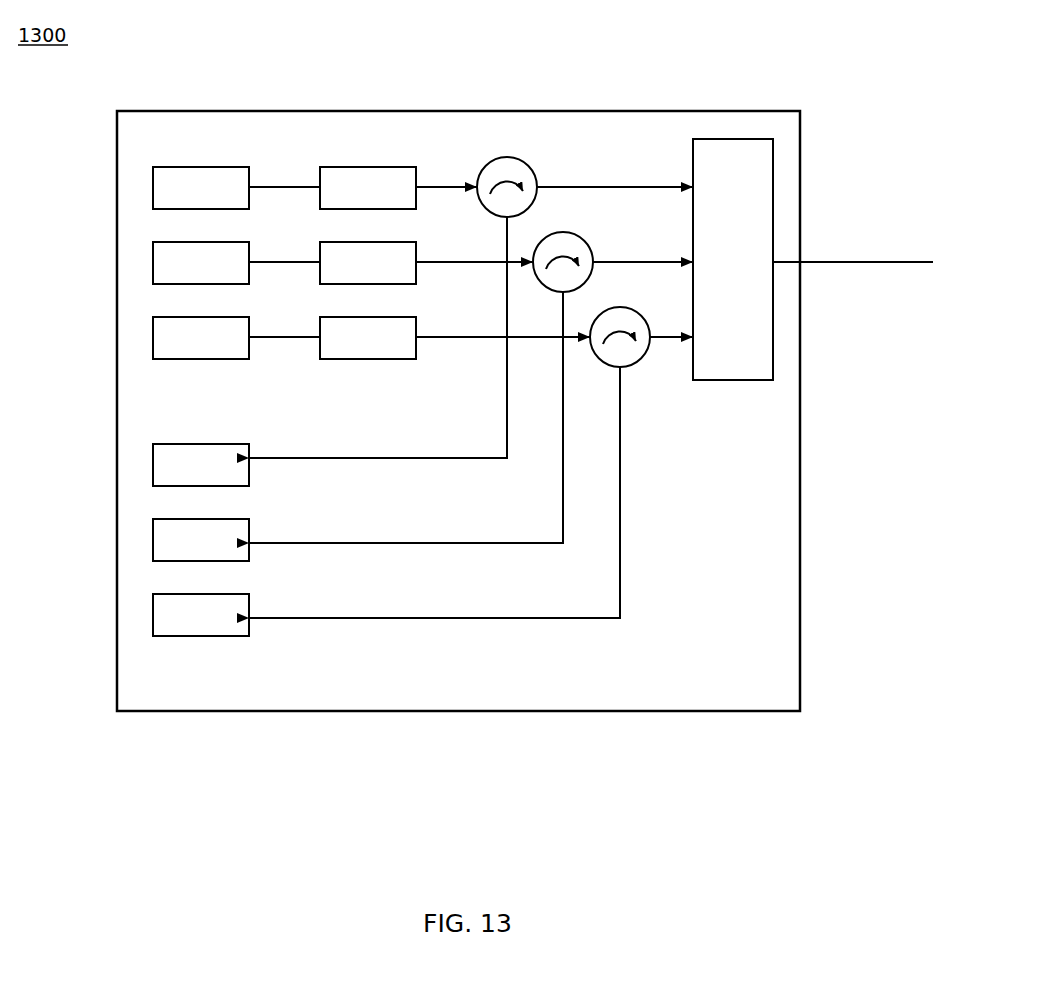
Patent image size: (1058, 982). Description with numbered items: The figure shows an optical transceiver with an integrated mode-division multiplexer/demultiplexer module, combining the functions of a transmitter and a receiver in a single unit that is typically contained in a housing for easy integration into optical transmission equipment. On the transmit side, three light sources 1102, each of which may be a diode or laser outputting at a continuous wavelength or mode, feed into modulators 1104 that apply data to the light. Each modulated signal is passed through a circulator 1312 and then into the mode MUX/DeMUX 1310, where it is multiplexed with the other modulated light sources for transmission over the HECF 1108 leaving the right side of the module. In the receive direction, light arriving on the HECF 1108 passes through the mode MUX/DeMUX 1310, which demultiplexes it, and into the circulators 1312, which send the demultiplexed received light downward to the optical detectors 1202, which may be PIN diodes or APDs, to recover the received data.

The light source 1102 is at (212, 160).
The modulator 1104 is at (357, 158).
The circulator 1312 is at (487, 160).
The mode MUX/DeMUX 1310 is at (686, 159).
The HECF 1108 is at (903, 253).
The optical detectors 1202 is at (153, 463).